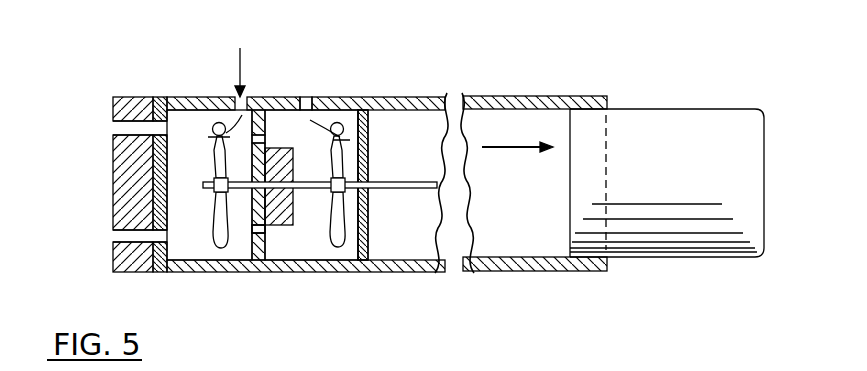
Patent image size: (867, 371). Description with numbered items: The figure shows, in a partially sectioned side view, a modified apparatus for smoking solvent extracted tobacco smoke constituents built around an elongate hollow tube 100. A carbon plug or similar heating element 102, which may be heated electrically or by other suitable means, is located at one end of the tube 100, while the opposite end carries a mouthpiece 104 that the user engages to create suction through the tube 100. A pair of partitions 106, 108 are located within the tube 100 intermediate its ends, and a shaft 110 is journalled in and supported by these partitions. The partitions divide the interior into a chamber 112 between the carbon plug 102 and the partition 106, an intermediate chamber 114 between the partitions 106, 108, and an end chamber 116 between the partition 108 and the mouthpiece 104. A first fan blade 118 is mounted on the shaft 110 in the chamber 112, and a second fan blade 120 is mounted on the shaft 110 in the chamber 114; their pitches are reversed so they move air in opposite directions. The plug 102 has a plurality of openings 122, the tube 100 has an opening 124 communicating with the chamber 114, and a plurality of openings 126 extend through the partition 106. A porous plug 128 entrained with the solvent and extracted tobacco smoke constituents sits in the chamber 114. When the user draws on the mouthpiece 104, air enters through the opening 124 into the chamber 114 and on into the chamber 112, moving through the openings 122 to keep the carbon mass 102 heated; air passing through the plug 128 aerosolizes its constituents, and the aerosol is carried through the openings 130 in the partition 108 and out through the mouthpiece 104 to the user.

The elongate hollow tube 100 is at (390, 93).
The carbon plug 102 is at (132, 98).
The mouthpiece 104 is at (678, 242).
The partition 106 is at (262, 112).
The partition 108 is at (366, 107).
The shaft 110 is at (388, 182).
The chamber 112 is at (192, 122).
The intermediate chamber 114 is at (315, 250).
The end chamber 116 is at (505, 130).
The first fan blade 118 is at (217, 212).
The second fan blade 120 is at (340, 242).
The openings 122 is at (127, 127).
The opening 124 is at (308, 88).
The openings 126 is at (260, 237).
The porous plug 128 is at (292, 200).
The openings 130 is at (370, 243).